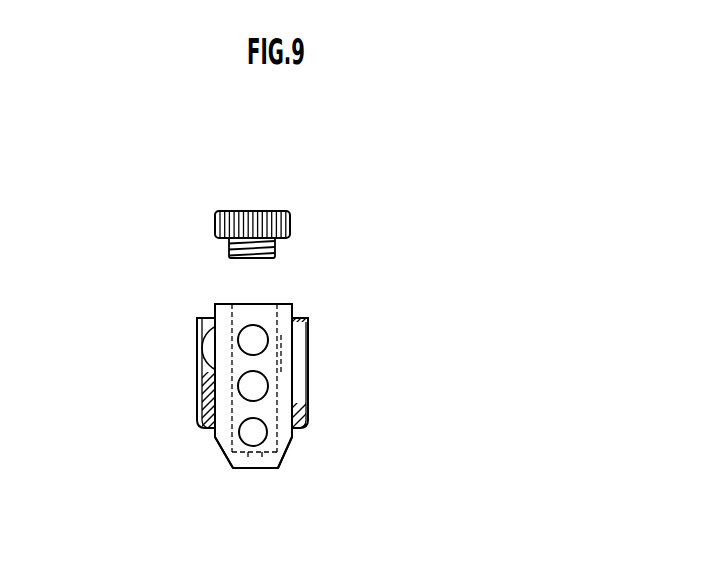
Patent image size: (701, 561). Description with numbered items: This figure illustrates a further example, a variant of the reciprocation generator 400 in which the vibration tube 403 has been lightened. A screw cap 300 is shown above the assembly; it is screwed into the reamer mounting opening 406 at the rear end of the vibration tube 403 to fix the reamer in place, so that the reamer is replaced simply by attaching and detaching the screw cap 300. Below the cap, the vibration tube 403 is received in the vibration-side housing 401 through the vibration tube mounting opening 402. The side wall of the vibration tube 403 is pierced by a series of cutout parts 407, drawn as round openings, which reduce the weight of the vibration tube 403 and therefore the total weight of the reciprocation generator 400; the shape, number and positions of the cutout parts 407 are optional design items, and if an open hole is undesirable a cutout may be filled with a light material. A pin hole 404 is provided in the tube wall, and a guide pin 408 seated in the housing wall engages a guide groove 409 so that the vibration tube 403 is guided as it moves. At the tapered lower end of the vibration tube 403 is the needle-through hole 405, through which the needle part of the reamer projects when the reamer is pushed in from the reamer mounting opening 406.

The screw cap 300 is at (259, 210).
The reciprocation generator 400 is at (408, 210).
The vibration-side housing 401 is at (208, 423).
The vibration tube mounting opening 402 is at (213, 430).
The vibration tube 403 is at (235, 468).
The pin hole 404 is at (280, 337).
The needle-through hole 405 is at (270, 468).
The reamer mounting opening 406 is at (217, 305).
The cutout part 407 is at (268, 386).
The guide pin 408 is at (207, 337).
The guide groove 409 is at (200, 367).